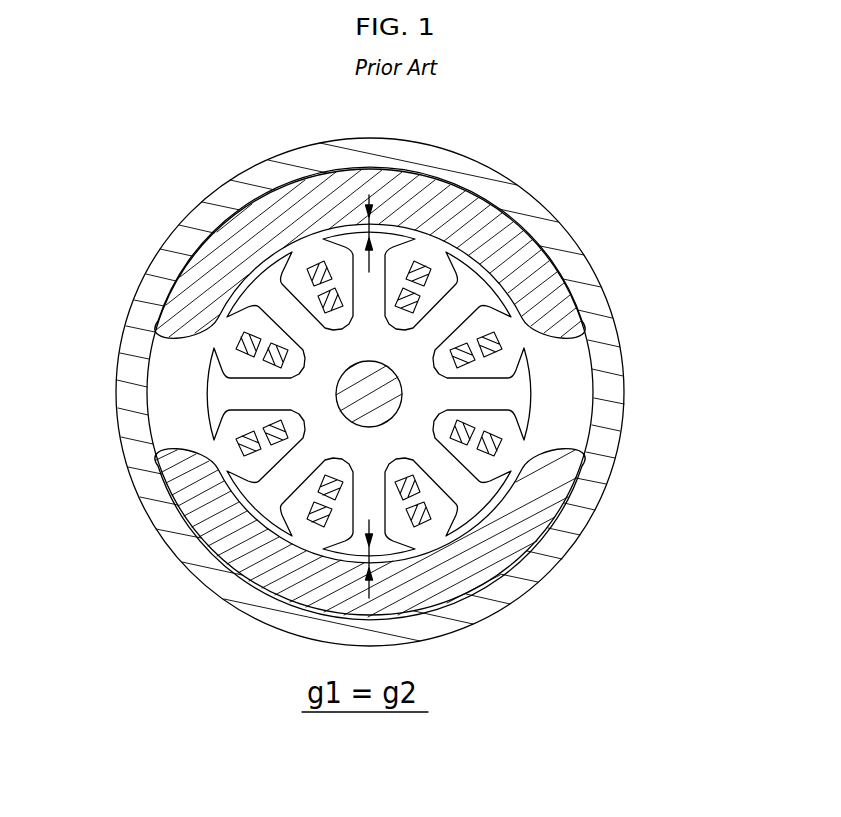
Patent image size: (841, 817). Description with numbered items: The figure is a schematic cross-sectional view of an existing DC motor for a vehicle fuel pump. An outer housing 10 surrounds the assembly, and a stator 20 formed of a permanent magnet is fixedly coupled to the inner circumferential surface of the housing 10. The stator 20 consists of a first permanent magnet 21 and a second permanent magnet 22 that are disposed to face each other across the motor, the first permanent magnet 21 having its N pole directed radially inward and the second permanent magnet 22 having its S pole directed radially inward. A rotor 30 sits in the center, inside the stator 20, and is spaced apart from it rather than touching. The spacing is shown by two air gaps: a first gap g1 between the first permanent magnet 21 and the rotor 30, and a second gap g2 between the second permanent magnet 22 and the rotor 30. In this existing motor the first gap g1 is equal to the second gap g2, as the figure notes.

The housing 10 is at (132, 368).
The stator 20 is at (459, 393).
The first permanent magnet 21 is at (578, 307).
The second permanent magnet 22 is at (427, 534).
The rotor 30 is at (208, 386).
The first gap g1 is at (400, 226).
The second gap g2 is at (400, 562).